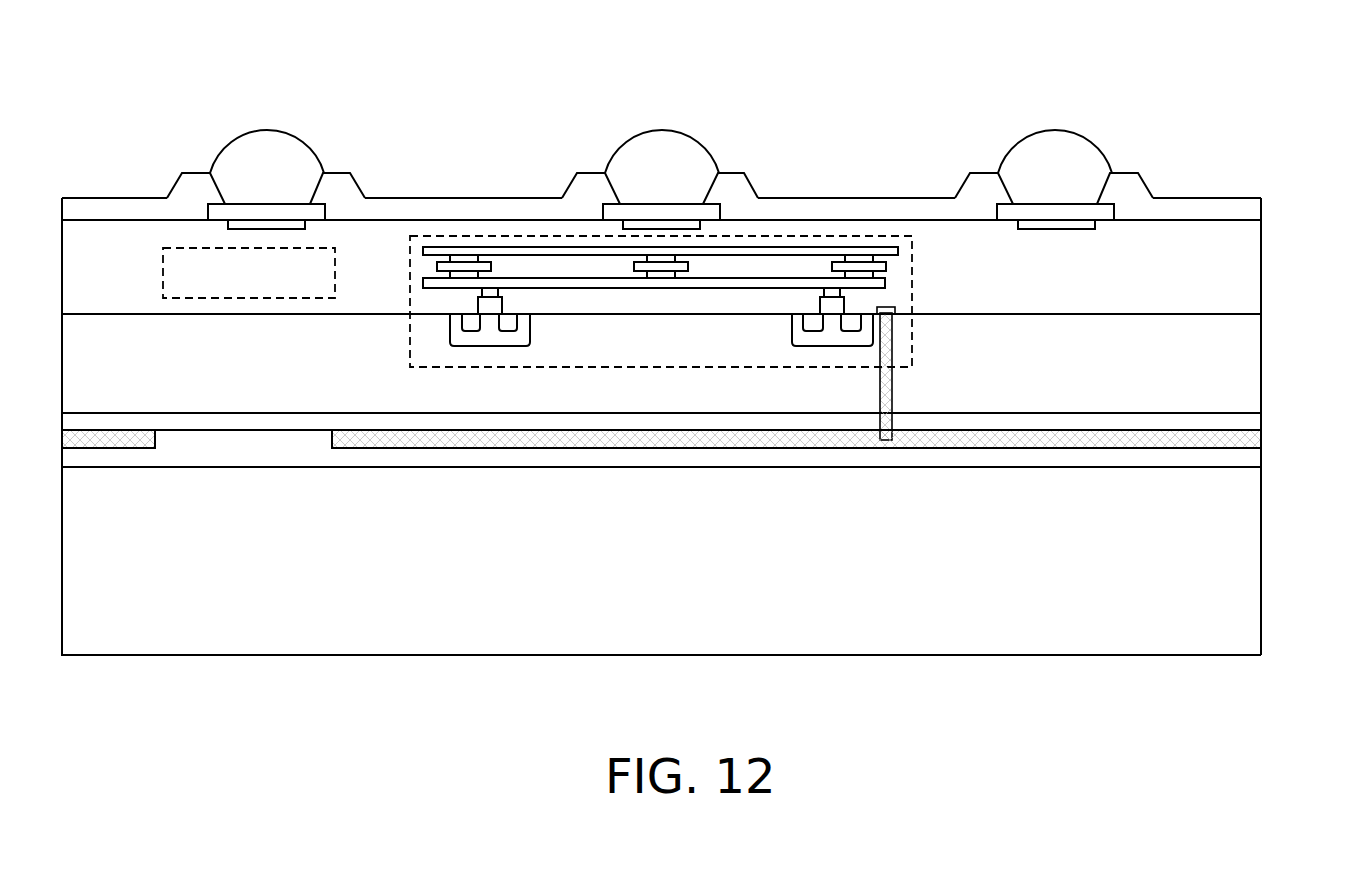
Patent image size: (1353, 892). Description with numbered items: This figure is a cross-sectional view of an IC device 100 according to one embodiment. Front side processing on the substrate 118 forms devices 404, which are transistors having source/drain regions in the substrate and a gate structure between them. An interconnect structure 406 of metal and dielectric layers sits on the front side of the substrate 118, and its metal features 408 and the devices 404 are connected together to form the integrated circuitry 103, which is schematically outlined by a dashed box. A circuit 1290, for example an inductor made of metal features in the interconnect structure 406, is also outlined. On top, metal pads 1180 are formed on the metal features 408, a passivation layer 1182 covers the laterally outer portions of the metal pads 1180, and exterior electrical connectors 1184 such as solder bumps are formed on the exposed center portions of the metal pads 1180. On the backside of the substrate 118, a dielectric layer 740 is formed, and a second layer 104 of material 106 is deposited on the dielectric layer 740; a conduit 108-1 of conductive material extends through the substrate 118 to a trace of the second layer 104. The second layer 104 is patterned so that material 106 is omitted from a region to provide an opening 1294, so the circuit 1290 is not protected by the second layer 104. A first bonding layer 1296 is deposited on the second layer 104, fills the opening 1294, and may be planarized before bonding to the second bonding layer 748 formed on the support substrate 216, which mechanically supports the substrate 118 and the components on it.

The IC device 100 is at (158, 100).
The exterior electrical connectors 1184 is at (245, 186).
The metal pads 1180 is at (327, 210).
The passivation layer 1182 is at (1252, 209).
The metal features 408 is at (305, 222).
The interconnect structure 406 is at (1252, 267).
The circuit 1290 is at (227, 278).
The integrated circuitry 103 is at (912, 345).
The devices 404 is at (544, 350).
The substrate 118 is at (1132, 382).
The conduit 108-1 is at (893, 391).
The dielectric layer 740 is at (1262, 420).
The second layer 104 is at (1262, 431).
The material 106 is at (1122, 438).
The opening 1294 is at (243, 446).
The first bonding layer 1296 is at (1262, 457).
The second bonding layer 748 is at (1262, 487).
The support substrate 216 is at (1132, 617).